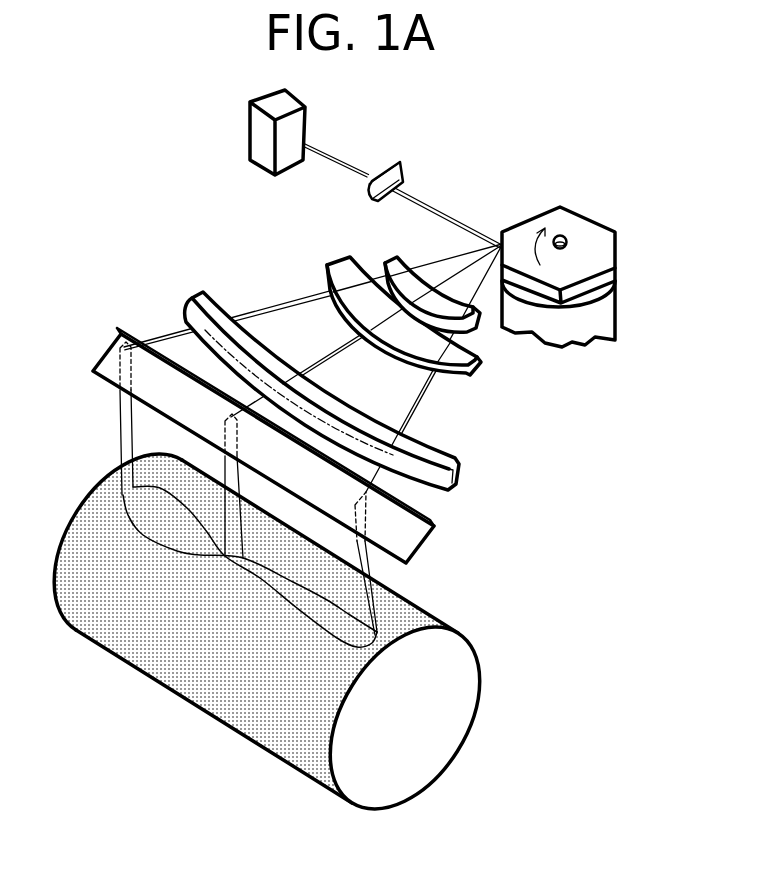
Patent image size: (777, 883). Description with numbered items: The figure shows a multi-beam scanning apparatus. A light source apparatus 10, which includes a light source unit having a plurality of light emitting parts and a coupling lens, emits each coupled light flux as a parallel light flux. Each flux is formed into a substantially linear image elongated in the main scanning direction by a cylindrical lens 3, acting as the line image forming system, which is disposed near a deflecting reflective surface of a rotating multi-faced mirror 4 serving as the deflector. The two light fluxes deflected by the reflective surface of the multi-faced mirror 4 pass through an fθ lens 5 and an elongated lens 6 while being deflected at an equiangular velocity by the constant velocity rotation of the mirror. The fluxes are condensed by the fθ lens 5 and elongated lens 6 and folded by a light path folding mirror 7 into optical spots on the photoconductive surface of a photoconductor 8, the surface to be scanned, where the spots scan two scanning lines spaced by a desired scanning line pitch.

The light source apparatus 10 is at (273, 102).
The cylindrical lens 3 is at (393, 173).
The rotating multi-faced mirror 4 is at (521, 232).
The fθ lens 5 is at (403, 257).
The elongated lens 6 is at (460, 466).
The light path folding mirror 7 is at (407, 548).
The photoconductor 8 is at (403, 615).